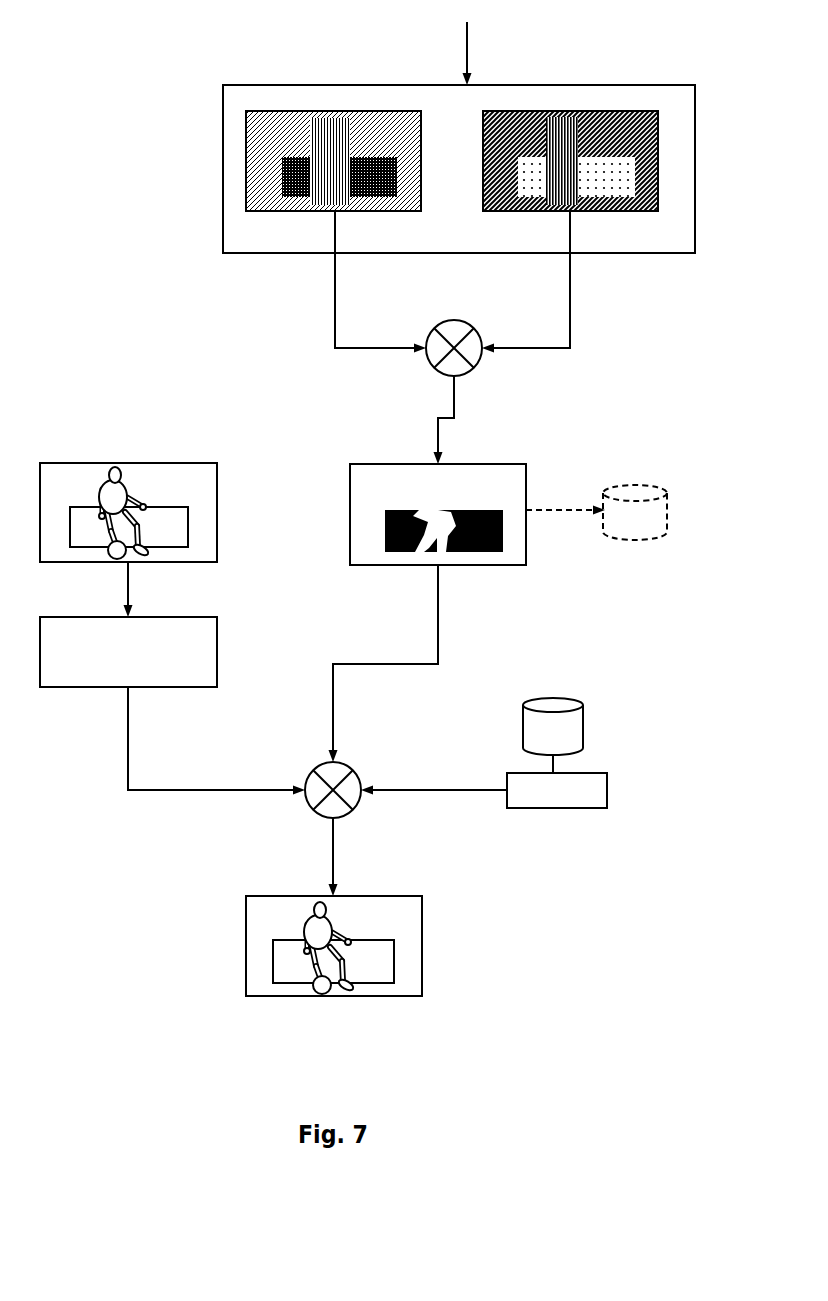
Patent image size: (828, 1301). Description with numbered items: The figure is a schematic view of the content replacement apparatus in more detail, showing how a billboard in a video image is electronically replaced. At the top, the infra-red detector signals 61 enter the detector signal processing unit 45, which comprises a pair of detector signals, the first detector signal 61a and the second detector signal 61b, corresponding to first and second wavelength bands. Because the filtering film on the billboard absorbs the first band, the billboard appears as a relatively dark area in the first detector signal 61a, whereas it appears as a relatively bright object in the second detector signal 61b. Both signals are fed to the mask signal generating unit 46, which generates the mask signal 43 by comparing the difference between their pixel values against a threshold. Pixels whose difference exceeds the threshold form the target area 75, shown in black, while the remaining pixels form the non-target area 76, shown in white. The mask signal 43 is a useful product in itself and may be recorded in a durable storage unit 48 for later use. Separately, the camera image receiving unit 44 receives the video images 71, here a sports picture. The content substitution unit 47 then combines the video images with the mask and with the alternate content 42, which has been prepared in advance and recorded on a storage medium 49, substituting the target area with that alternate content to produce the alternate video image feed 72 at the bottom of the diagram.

The infra-red detector signals 61 is at (470, 44).
The first detector signal 61a is at (373, 212).
The second detector signal 61b is at (615, 212).
The detector signal processing unit 45 is at (592, 252).
The mask signal generating unit 46 is at (467, 328).
The mask signal 43 is at (455, 417).
The non-target area 76 is at (508, 490).
The target area 75 is at (484, 552).
The durable storage unit 48 is at (665, 493).
The video images 71 is at (213, 517).
The camera image receiving unit 44 is at (213, 670).
The content substitution unit 47 is at (353, 780).
The storage medium 49 is at (580, 725).
The alternate content 42 is at (603, 780).
The alternate video image feed 72 is at (417, 952).